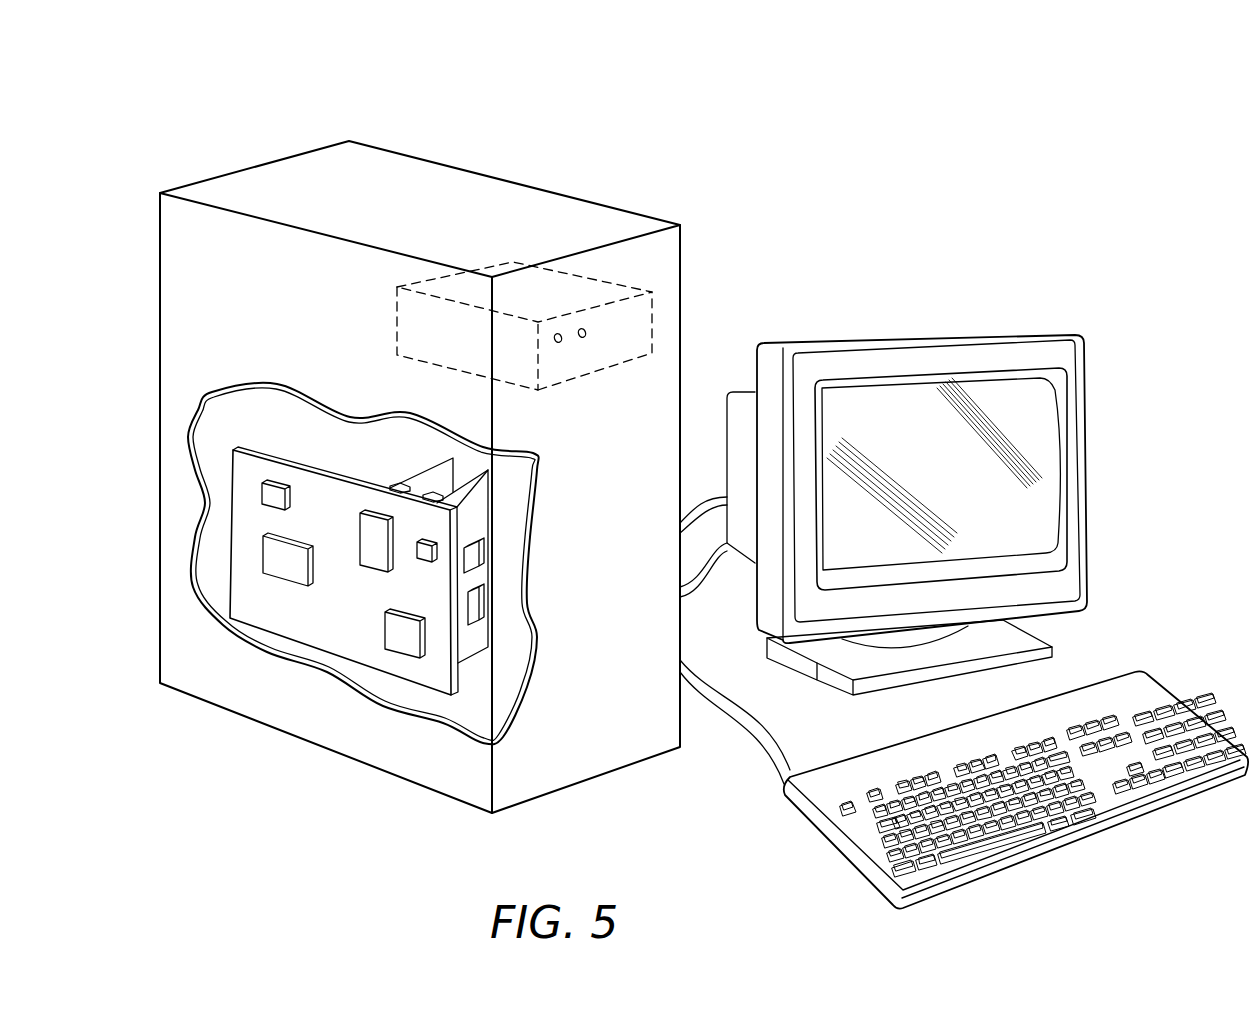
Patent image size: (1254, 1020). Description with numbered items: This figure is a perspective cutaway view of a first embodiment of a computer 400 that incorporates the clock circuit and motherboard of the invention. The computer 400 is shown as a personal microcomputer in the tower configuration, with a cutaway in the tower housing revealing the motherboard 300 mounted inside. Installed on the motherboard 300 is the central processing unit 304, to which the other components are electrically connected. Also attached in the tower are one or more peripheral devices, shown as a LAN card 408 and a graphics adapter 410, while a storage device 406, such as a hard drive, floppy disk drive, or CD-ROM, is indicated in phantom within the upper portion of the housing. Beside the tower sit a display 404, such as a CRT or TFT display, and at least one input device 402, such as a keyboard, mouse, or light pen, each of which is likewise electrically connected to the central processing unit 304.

The computer 400 is at (556, 141).
The input device 402 is at (1140, 687).
The display 404 is at (1015, 333).
The storage device 406 is at (641, 320).
The LAN card 408 is at (428, 472).
The graphics adapter 410 is at (475, 513).
The motherboard 300 is at (257, 603).
The central processing unit 304 is at (283, 563).